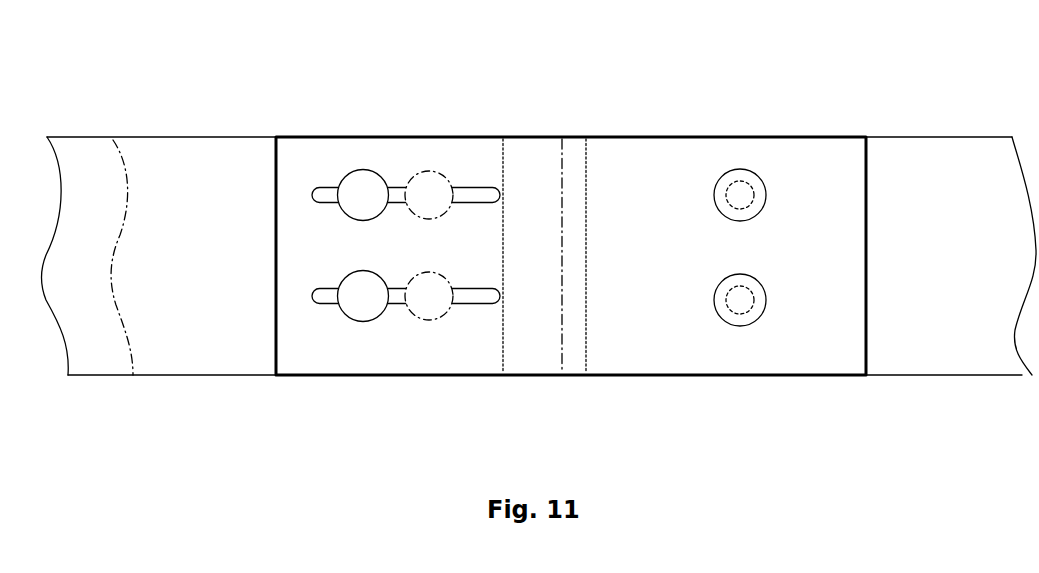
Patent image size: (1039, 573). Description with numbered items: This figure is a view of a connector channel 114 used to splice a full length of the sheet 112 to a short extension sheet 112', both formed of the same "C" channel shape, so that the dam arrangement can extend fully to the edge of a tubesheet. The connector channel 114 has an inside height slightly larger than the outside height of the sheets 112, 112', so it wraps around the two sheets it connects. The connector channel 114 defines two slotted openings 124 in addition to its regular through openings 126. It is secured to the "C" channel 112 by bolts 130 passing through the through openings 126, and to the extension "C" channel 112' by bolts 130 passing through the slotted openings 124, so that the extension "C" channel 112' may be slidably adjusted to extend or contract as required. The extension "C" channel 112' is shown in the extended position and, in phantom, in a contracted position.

The sheet 112 is at (951, 209).
The extension sheet 112' is at (200, 208).
The connector channel 114 is at (620, 168).
The slotted openings 124 is at (470, 192).
The through openings 126 is at (735, 202).
The bolts 130 is at (372, 171).